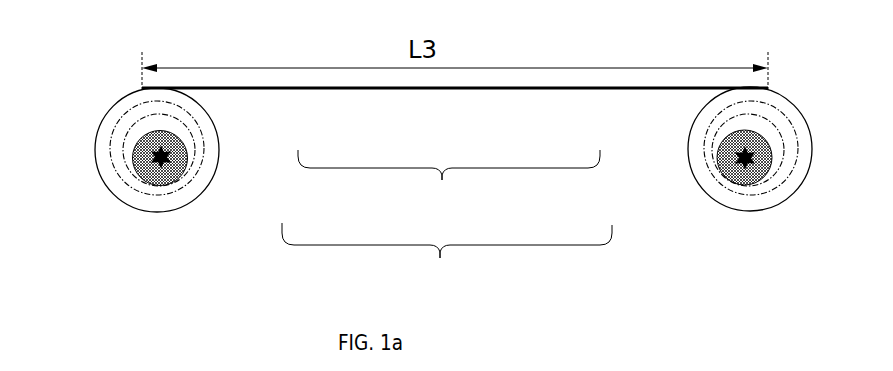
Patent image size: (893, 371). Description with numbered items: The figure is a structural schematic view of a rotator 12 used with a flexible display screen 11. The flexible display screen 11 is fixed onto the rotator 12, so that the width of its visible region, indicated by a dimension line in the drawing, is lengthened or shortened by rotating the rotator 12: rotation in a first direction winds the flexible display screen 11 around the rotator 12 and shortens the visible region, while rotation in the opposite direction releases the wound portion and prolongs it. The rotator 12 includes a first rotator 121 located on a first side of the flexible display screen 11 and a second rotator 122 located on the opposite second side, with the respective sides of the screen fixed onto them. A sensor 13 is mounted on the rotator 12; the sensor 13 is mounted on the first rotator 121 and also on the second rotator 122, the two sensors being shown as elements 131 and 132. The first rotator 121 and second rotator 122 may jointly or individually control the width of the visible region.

The flexible display screen 11 is at (168, 85).
The rotator 12 is at (453, 216).
The first rotator 121 is at (180, 177).
The second rotator 122 is at (718, 167).
The sensor 13 is at (452, 172).
The first fastening element 131 is at (175, 152).
The second fastening element 132 is at (720, 153).